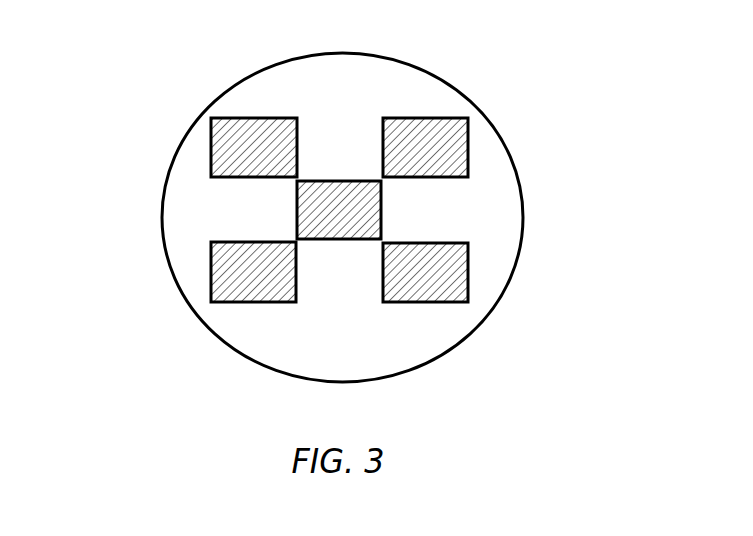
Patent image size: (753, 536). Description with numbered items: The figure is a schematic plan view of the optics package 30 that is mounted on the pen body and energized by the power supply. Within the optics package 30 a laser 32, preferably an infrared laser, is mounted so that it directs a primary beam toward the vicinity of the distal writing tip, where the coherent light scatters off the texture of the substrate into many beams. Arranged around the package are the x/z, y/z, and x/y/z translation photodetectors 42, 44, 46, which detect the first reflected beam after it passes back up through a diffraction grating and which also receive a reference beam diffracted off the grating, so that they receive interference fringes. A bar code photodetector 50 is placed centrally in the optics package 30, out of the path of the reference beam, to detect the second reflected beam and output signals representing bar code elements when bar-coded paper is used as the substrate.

The optics package 30 is at (558, 98).
The laser 32 is at (230, 278).
The x/z translation photodetector 42 is at (228, 143).
The y/z translation photodetector 44 is at (468, 280).
The x/y/z translation photodetector 46 is at (468, 140).
The bar code photodetector 50 is at (381, 208).